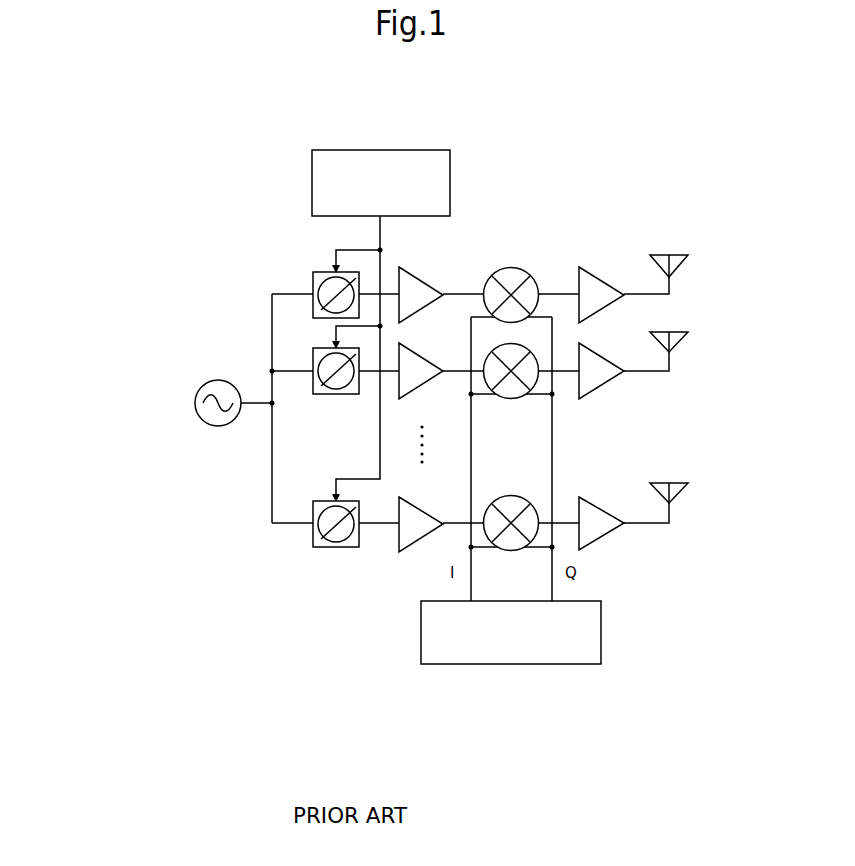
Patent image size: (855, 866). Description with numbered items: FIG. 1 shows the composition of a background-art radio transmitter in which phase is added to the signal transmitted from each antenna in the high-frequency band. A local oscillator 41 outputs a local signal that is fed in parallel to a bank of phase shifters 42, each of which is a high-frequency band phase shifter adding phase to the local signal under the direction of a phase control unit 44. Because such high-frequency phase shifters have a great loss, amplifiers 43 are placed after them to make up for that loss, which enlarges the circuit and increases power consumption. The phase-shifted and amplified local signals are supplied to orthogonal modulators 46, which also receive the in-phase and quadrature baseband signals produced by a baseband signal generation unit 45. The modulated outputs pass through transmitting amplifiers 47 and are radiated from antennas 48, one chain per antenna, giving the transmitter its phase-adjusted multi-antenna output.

The local oscillator 41 is at (210, 380).
The phase shifters 42 is at (311, 279).
The amplifiers 43 is at (402, 543).
The phase control unit 44 is at (333, 150).
The baseband signal generation unit 45 is at (452, 665).
The orthogonal modulators 46 is at (530, 268).
The transmitting amplifiers 47 is at (610, 535).
The antennas 48 is at (685, 248).